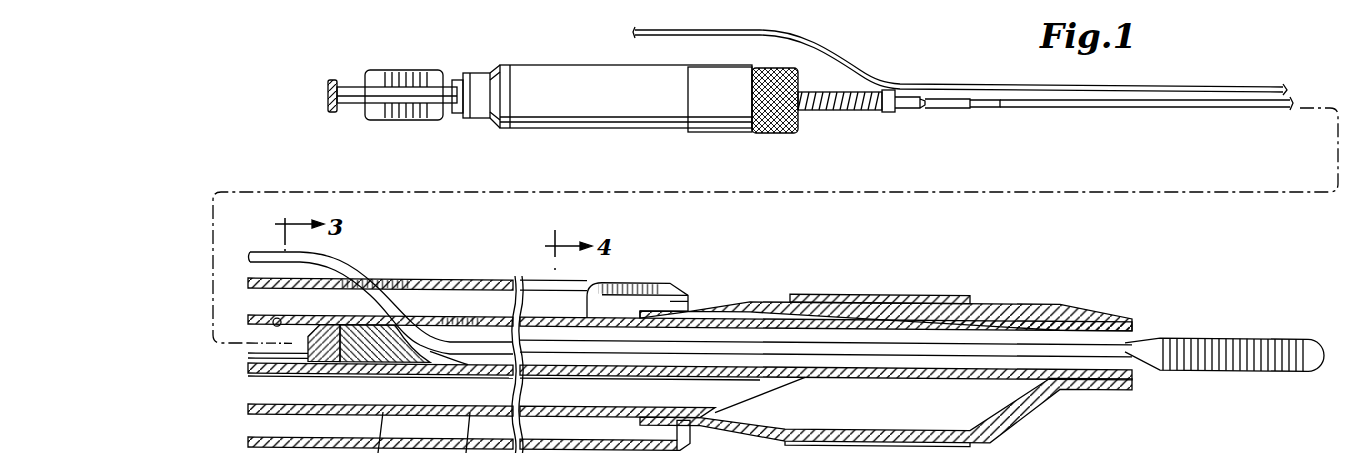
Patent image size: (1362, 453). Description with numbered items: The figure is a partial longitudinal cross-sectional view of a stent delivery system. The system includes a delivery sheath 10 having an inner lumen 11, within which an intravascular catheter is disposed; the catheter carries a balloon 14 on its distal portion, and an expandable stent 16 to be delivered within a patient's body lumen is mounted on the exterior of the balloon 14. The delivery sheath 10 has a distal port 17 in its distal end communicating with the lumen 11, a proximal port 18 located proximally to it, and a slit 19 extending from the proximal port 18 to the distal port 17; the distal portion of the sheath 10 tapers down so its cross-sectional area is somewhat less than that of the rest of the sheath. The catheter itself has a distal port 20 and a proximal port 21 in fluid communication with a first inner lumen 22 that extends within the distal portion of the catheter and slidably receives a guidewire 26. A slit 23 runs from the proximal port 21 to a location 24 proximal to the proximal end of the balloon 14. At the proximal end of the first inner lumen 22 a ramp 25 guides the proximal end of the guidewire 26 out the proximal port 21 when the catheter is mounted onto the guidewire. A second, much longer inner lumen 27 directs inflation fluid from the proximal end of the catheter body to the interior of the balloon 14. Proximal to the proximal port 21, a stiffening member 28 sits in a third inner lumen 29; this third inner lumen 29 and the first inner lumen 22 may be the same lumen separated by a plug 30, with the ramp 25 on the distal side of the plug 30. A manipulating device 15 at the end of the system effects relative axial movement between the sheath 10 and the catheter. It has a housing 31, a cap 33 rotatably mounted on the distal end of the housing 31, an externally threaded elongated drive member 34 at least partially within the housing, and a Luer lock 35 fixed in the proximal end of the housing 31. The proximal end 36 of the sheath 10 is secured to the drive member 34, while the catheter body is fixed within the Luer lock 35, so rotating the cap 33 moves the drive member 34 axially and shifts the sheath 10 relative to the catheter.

The delivery sheath 10 is at (1103, 110).
The inner lumen 11 is at (262, 433).
The balloon 14 is at (1008, 432).
The manipulating device 15 is at (574, 58).
The expandable stent 16 is at (920, 295).
The distal port 17 is at (690, 428).
The proximal port 18 is at (378, 279).
The slit 19 is at (478, 284).
The distal port 20 is at (1130, 342).
The proximal port 21 is at (423, 318).
The first inner lumen 22 is at (925, 368).
The slit 23 is at (533, 318).
The location 24 is at (575, 322).
The ramp 25 is at (413, 350).
The guidewire 26 is at (832, 52).
The second inner lumen 27 is at (262, 402).
The stiffening member 28 is at (255, 335).
The third inner lumen 29 is at (277, 318).
The plug 30 is at (372, 352).
The housing 31 is at (612, 80).
The cap 33 is at (775, 125).
The elongated drive member 34 is at (848, 110).
The Luer lock 35 is at (416, 70).
The proximal end 36 is at (940, 110).